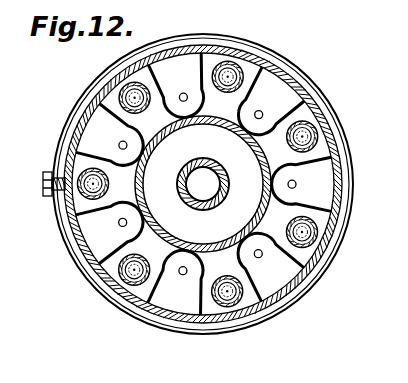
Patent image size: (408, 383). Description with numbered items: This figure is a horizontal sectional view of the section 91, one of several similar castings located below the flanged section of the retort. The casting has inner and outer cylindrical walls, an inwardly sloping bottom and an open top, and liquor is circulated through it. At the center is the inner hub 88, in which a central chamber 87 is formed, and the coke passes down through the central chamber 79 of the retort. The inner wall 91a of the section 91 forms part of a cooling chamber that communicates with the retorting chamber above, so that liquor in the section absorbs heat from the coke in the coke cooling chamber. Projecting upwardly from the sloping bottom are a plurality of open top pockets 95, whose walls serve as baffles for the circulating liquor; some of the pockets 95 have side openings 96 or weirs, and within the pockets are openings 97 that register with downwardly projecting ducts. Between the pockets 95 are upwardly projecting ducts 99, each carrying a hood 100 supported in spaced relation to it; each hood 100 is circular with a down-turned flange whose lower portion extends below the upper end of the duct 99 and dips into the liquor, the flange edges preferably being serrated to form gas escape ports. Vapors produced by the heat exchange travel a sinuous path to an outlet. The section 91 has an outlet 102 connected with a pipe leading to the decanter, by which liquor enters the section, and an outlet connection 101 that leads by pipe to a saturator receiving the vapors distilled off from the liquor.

The central chamber 79 is at (203, 184).
The central chamber 87 is at (203, 184).
The inner hub 88 is at (219, 167).
The section 91 is at (341, 133).
The inner wall 91a is at (168, 231).
The open top pockets 95 is at (110, 245).
The side openings 96 is at (317, 212).
The openings 97 is at (259, 256).
The upwardly projecting ducts 99 is at (137, 108).
The hood 100 is at (120, 88).
The outlet connection 101 is at (48, 178).
The outlet 102 is at (57, 198).